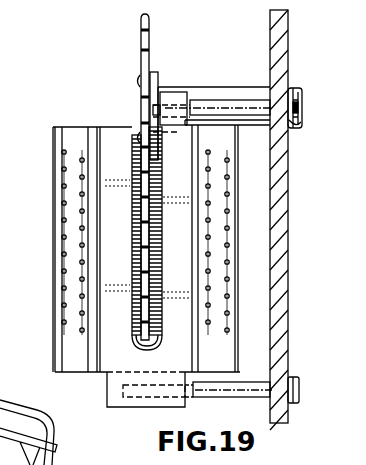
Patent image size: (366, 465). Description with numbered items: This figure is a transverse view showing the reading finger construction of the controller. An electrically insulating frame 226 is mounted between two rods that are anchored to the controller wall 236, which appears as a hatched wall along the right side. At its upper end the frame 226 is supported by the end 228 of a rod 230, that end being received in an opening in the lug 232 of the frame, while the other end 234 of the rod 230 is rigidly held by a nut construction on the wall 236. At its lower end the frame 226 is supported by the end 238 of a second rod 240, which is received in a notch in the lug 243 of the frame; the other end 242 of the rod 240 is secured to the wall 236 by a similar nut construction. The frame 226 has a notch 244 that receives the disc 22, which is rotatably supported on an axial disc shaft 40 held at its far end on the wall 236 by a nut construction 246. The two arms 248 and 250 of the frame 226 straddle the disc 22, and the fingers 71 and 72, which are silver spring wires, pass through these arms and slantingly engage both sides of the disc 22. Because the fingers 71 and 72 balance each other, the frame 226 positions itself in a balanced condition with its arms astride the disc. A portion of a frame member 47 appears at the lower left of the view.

The disc 22 is at (140, 42).
The axial disc shaft 40 is at (225, 88).
The frame member 47 is at (42, 456).
The finger 71 is at (138, 147).
The finger 72 is at (138, 238).
The insulating frame 226 is at (256, 232).
The end of rod 228 is at (153, 108).
The rod 230 is at (207, 103).
The lug 232 is at (173, 92).
The end of rod 234 is at (297, 100).
The controller wall 236 is at (287, 188).
The end of rod 238 is at (145, 397).
The rod 240 is at (263, 397).
The end of rod 242 is at (299, 385).
The lug 243 is at (107, 390).
The notch 244 is at (128, 313).
The nut construction 246 is at (300, 123).
The arm 248 is at (62, 276).
The arm 250 is at (222, 272).